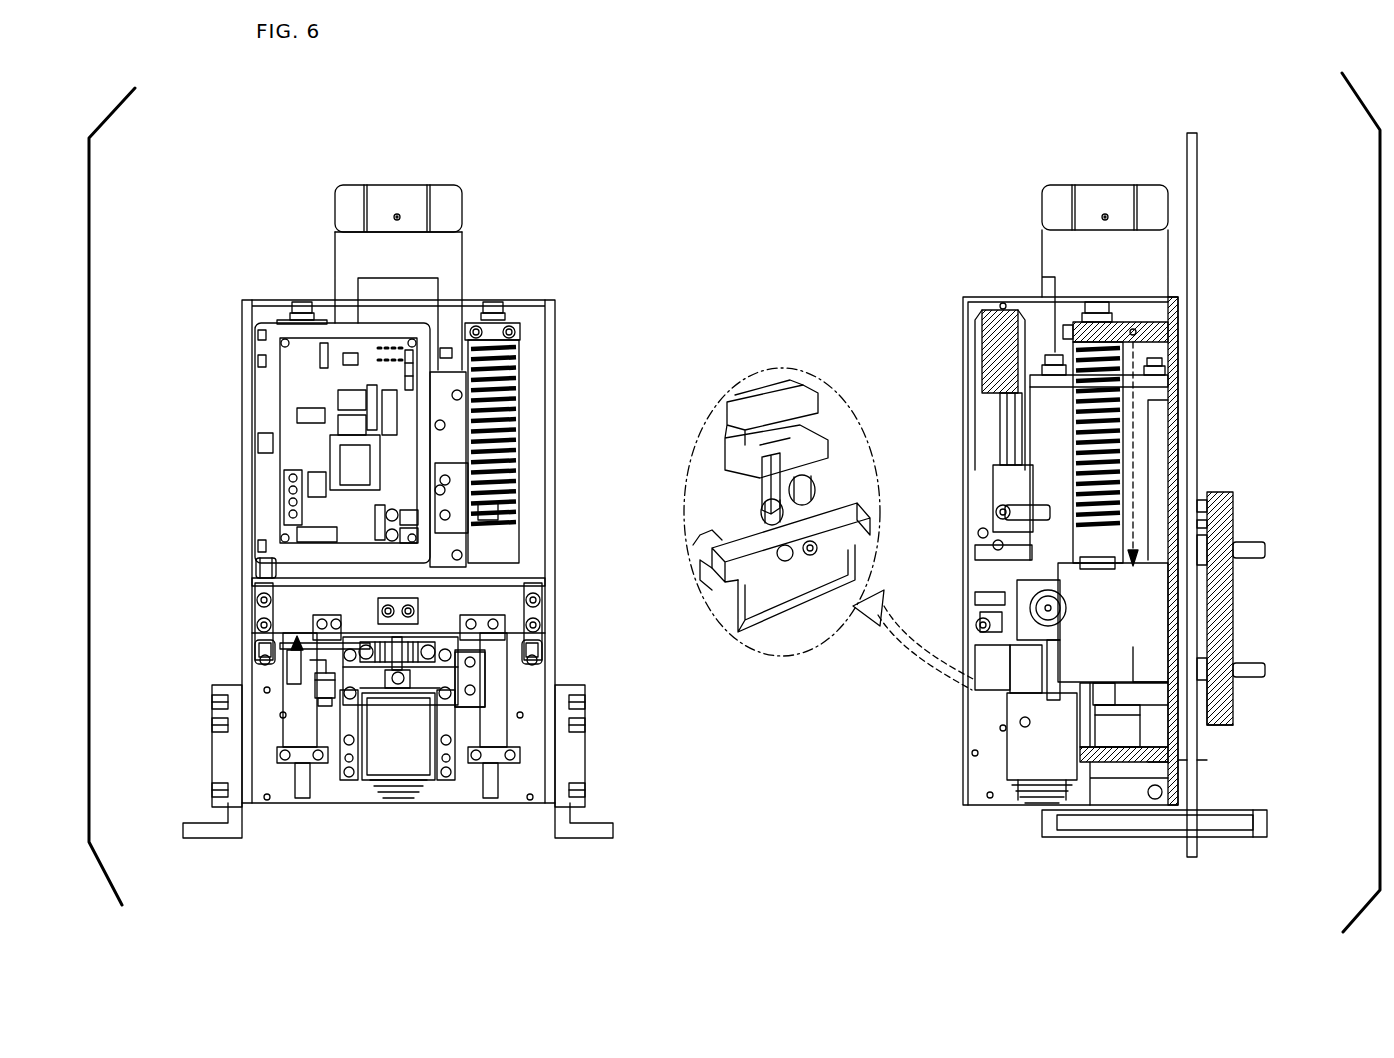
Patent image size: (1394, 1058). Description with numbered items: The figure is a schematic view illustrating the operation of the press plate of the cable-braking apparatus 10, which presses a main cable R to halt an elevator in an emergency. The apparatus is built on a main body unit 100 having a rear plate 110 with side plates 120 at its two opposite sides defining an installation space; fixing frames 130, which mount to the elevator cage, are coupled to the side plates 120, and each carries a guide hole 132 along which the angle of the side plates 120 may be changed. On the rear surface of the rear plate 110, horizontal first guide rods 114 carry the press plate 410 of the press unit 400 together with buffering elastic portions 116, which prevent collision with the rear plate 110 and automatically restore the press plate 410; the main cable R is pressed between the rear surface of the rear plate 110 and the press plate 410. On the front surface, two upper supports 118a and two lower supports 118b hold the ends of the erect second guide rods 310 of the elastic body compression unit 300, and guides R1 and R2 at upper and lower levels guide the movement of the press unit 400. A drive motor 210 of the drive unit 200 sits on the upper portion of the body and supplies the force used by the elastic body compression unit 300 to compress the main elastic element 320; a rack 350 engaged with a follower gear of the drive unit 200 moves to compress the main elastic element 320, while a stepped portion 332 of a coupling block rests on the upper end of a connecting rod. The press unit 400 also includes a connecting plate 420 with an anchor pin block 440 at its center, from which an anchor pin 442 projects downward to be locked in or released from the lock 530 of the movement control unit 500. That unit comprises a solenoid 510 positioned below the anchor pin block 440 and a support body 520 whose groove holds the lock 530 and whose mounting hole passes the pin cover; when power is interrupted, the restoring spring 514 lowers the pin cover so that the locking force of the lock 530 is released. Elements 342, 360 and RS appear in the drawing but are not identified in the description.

The cable-braking apparatus 10 is at (252, 139).
The main body unit 100 is at (562, 618).
The rear plate 110 is at (1180, 400).
The first guide rods 114 is at (1252, 672).
The buffering elastic portions 116 is at (1232, 700).
The upper supports 118a is at (1140, 327).
The lower supports 118b is at (1133, 762).
The side plates 120 is at (548, 400).
The fixing frames 130 is at (1250, 770).
The guide hole 132 is at (1162, 797).
The drive unit 200 is at (318, 238).
The drive motor 210 is at (400, 200).
The elastic body compression unit 300 is at (1142, 437).
The second guide rods 310 is at (495, 728).
The main elastic element 320 is at (520, 350).
The stepped portion 332 is at (1140, 648).
The lower gear housing 342 is at (1115, 755).
The rack 350 is at (1040, 600).
The lower pin 360 is at (1215, 640).
The press unit 400 is at (287, 675).
The press plate 410 is at (1233, 510).
The connecting plate 420 is at (300, 598).
The anchor pin block 440 is at (412, 620).
The anchor pin 442 is at (470, 665).
The movement control unit 500 is at (348, 808).
The solenoid 510 is at (370, 755).
The restoring spring 514 is at (1030, 810).
The support body 520 is at (748, 620).
The lock 530 is at (462, 655).
The main cable R is at (1200, 178).
The guide R1 is at (258, 650).
The guide R2 is at (262, 574).
The sensor RS is at (520, 510).